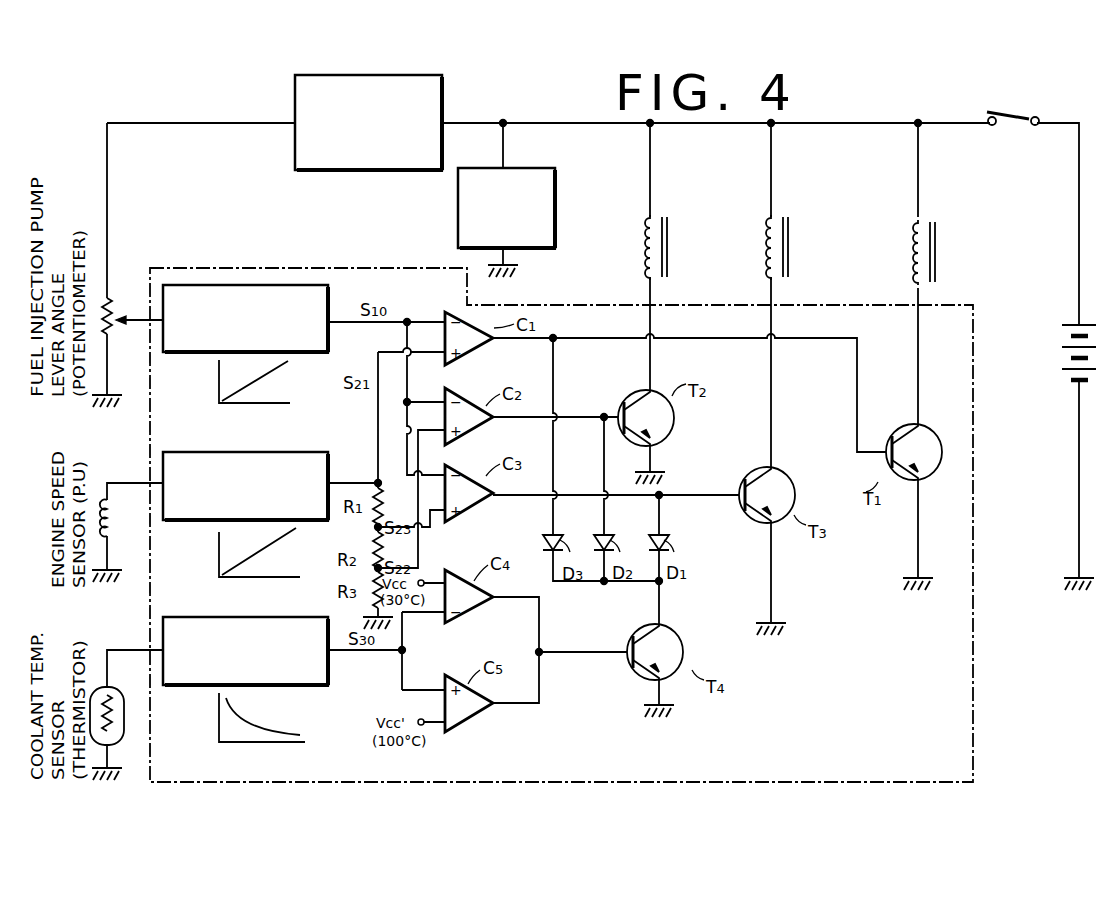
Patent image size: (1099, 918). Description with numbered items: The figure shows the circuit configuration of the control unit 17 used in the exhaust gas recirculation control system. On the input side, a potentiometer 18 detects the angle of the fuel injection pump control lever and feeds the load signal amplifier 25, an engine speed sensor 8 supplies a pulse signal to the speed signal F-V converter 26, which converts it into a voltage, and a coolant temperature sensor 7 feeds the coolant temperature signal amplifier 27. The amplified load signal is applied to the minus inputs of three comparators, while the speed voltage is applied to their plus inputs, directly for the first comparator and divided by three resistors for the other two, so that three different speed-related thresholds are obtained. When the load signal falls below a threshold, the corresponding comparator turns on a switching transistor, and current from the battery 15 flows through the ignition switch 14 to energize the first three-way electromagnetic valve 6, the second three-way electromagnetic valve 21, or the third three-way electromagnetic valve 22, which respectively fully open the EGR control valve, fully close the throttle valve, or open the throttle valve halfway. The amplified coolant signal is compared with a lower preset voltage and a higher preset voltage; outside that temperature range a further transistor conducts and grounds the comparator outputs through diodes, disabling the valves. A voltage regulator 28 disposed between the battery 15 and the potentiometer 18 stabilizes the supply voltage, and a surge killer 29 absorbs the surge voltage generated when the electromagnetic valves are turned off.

The first three-way electromagnetic valve 6 is at (935, 253).
The coolant temperature sensor 7 is at (124, 725).
The engine speed sensor 8 is at (113, 529).
The ignition switch 14 is at (1010, 113).
The battery 15 is at (1062, 355).
The control unit 17 is at (973, 703).
The potentiometer 18 is at (110, 300).
The second three-way electromagnetic valve 21 is at (667, 246).
The third three-way electromagnetic valve 22 is at (788, 250).
The load signal amplifier 25 is at (298, 284).
The F-V converter 26 is at (329, 478).
The coolant temperature signal amplifier 27 is at (318, 687).
The voltage regulator 28 is at (443, 101).
The surge killer 29 is at (556, 208).